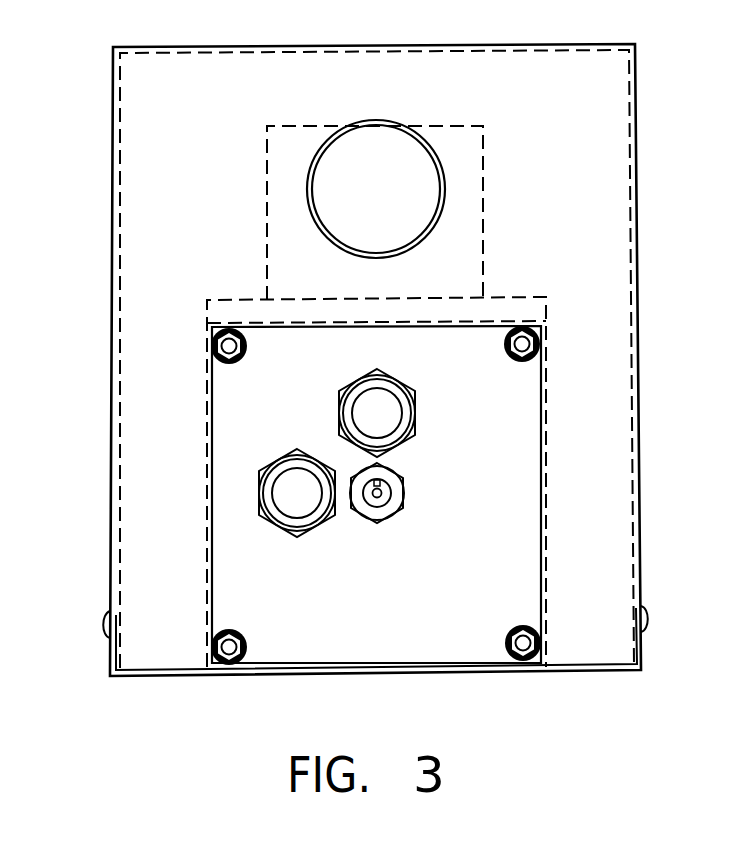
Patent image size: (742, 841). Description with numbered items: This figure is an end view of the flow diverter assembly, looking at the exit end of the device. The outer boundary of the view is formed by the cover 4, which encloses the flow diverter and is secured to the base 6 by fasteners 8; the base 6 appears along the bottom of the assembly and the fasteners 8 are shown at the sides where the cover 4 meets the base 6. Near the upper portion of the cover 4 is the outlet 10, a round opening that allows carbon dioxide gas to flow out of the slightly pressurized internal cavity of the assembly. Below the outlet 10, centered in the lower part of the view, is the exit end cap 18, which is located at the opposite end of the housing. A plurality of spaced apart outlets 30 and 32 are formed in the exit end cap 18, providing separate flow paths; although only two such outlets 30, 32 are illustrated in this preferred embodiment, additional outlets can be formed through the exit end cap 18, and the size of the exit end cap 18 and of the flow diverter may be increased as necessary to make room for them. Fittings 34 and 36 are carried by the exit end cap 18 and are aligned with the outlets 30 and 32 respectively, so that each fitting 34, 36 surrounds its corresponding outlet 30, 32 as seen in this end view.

The cover 4 is at (552, 46).
The base 6 is at (600, 672).
The fasteners 8 is at (105, 624).
The outlet 10 is at (361, 202).
The exit end cap 18 is at (423, 601).
The outlet 30 is at (362, 425).
The outlet 32 is at (282, 505).
The fitting 34 is at (407, 392).
The fitting 36 is at (310, 532).